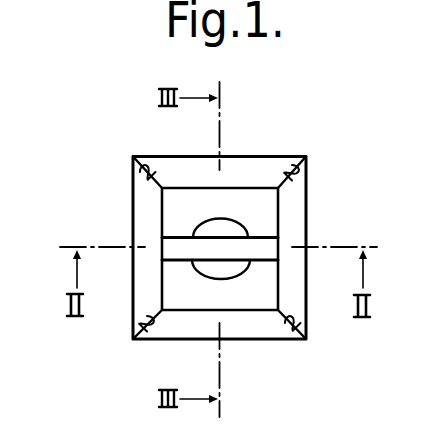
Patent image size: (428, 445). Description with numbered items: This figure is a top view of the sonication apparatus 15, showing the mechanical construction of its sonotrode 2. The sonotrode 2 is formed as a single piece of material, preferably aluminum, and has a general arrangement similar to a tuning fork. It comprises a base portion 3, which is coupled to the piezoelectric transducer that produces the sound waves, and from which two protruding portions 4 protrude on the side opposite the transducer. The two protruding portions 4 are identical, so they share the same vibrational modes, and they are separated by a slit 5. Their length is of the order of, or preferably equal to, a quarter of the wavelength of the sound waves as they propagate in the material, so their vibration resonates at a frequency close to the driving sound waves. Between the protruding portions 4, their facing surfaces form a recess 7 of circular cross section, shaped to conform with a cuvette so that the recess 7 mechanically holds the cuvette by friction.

The sonotrode 2 is at (263, 161).
The base portion 3 is at (292, 216).
The protruding portions 4 is at (188, 200).
The slit 5 is at (258, 253).
The recess 7 is at (200, 233).
The sonication apparatus 15 is at (104, 348).